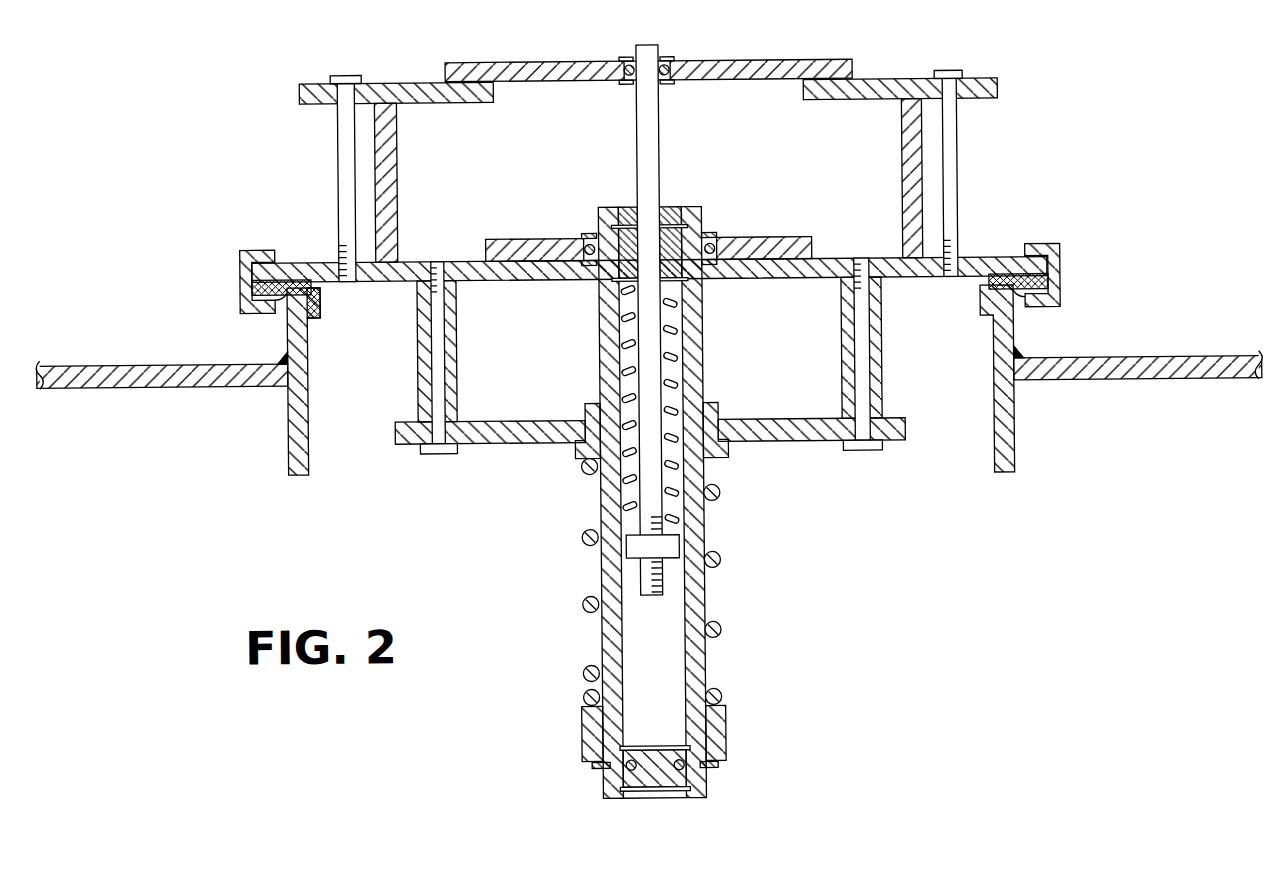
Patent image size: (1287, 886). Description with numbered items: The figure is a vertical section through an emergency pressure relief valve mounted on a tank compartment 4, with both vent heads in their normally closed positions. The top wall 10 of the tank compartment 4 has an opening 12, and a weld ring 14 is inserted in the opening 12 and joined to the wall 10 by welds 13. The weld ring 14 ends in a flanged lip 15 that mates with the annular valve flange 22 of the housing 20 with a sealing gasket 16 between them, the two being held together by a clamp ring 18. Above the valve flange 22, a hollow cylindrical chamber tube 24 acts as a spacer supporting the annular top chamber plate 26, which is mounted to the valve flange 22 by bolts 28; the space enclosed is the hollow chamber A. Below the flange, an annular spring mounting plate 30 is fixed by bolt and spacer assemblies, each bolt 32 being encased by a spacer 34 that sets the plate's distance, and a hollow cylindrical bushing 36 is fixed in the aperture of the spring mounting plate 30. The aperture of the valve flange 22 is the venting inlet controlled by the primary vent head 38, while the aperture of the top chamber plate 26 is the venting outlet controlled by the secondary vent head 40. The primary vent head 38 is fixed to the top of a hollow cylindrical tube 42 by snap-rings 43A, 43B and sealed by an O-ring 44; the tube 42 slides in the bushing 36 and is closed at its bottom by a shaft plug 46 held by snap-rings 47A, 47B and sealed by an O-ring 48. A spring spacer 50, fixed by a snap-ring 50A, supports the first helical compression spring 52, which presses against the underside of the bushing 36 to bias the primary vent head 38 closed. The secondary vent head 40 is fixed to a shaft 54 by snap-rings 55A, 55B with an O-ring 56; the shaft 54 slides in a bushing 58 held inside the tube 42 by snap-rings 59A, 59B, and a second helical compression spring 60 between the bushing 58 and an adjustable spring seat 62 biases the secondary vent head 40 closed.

The top wall 10 is at (1165, 361).
The opening 12 is at (950, 430).
The welds 13 is at (283, 358).
The weld ring 14 is at (308, 355).
The flanged lip 15 is at (288, 305).
The sealing gasket 16 is at (312, 288).
The clamp ring 18 is at (241, 265).
The housing 20 is at (972, 193).
The annular valve flange 22 is at (985, 260).
The hollow cylindrical chamber tube 24 is at (904, 160).
The annular top chamber plate 26 is at (888, 81).
The bolts 28 is at (346, 185).
The annular spring mounting plate 30 is at (485, 443).
The bolt 32 is at (438, 402).
The spacer 34 is at (457, 355).
The hollow cylindrical bushing 36 is at (725, 455).
The primary vent head 38 is at (758, 238).
The secondary vent head 40 is at (782, 61).
The hollow cylindrical tube 42 is at (688, 352).
The snap-ring 43A is at (590, 240).
The snap-ring 43B is at (590, 264).
The O-ring 44 is at (712, 245).
The shaft plug 46 is at (660, 787).
The snap-ring 47A is at (630, 748).
The snap-ring 47B is at (622, 791).
The O-ring 48 is at (680, 770).
The hollow cylindrical spring spacer 50 is at (725, 733).
The snap-ring 50A is at (590, 767).
The first helical compression spring 52 is at (722, 555).
The shaft 54 is at (650, 150).
The snap-ring 55A is at (632, 60).
The snap-ring 55B is at (634, 84).
The O-ring 56 is at (668, 62).
The bushing 58 is at (682, 281).
The snap-ring 59A is at (625, 225).
The snap-ring 59B is at (688, 299).
The second helical compression spring 60 is at (622, 345).
The adjustable spring seat 62 is at (630, 550).
The hollow chamber A is at (479, 174).
The tank compartment 4 is at (914, 598).